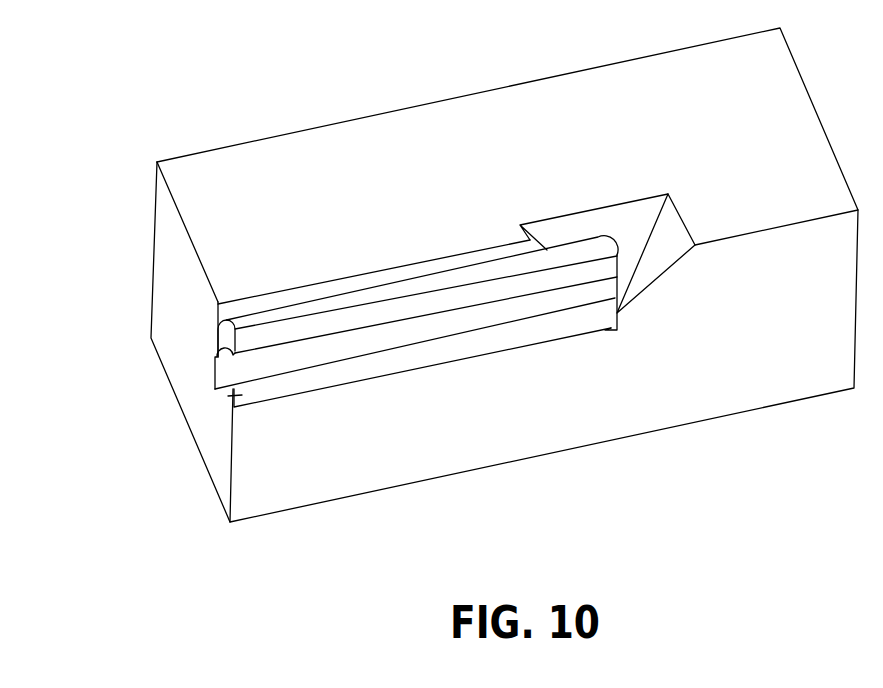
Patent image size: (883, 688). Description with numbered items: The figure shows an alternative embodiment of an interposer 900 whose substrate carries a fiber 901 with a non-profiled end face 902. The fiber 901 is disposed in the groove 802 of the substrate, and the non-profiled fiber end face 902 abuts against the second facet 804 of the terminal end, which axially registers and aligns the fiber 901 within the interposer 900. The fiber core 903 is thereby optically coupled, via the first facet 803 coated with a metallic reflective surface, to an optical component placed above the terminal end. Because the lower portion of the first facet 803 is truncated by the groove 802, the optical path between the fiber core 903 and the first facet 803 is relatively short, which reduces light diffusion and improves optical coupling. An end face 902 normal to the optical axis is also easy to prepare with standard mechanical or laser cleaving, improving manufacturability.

The interposer 900 is at (136, 274).
The non-profiled fiber end face 902 is at (620, 265).
The first facet 803 is at (658, 258).
The groove 802 is at (228, 314).
The fiber core 903 is at (495, 320).
The fiber 901 is at (234, 396).
The second facet 804 is at (613, 326).